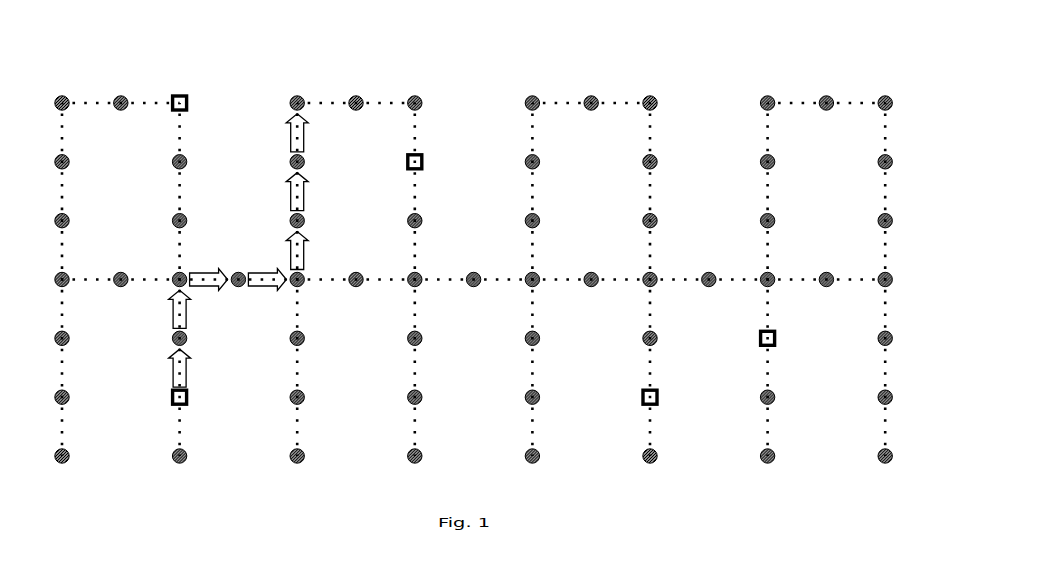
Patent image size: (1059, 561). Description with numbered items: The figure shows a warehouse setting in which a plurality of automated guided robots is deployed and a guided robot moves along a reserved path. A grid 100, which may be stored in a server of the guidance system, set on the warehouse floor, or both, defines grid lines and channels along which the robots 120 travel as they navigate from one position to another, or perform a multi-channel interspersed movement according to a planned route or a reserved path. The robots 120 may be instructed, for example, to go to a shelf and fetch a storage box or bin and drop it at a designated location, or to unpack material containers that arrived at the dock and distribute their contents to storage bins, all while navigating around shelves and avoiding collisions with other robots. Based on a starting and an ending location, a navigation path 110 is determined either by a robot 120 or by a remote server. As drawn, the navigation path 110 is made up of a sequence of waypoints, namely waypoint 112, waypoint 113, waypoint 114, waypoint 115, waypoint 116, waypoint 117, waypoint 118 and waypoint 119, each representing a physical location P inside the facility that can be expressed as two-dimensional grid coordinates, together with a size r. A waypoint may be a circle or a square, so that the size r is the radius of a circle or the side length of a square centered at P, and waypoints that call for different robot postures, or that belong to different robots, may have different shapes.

The grid 100 is at (688, 72).
The navigation path 110 is at (284, 128).
The waypoint W112 112 is at (173, 397).
The waypoint W113 113 is at (173, 338).
The waypoint W114 114 is at (173, 276).
The waypoint W115 115 is at (233, 274).
The waypoint W116 116 is at (291, 276).
The waypoint W117 117 is at (291, 220).
The waypoint W118 118 is at (291, 160).
The waypoint W119 119 is at (291, 101).
The robot 120 is at (188, 101).